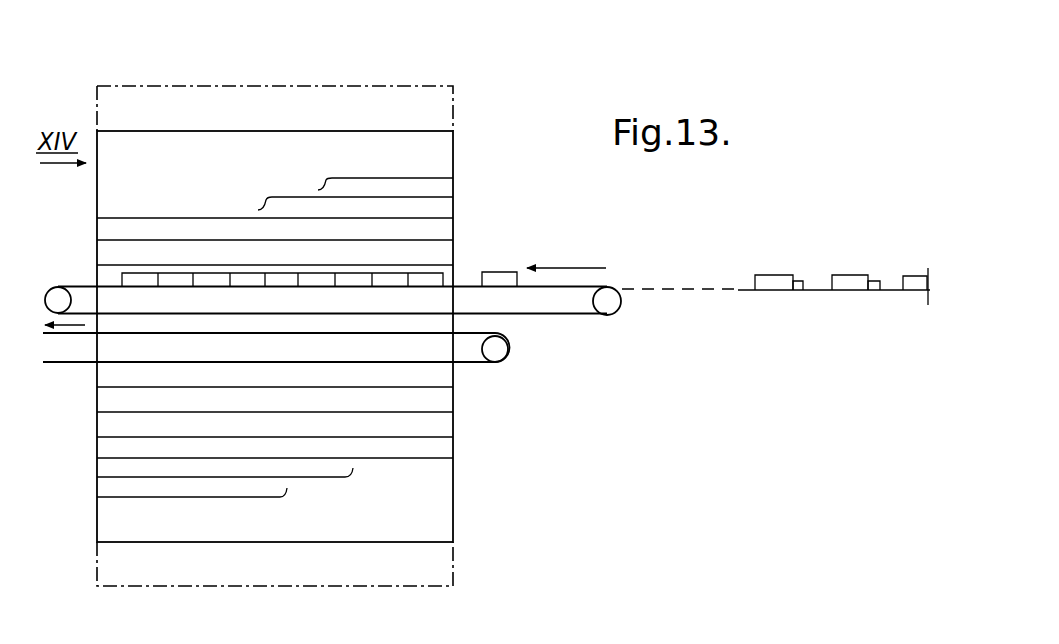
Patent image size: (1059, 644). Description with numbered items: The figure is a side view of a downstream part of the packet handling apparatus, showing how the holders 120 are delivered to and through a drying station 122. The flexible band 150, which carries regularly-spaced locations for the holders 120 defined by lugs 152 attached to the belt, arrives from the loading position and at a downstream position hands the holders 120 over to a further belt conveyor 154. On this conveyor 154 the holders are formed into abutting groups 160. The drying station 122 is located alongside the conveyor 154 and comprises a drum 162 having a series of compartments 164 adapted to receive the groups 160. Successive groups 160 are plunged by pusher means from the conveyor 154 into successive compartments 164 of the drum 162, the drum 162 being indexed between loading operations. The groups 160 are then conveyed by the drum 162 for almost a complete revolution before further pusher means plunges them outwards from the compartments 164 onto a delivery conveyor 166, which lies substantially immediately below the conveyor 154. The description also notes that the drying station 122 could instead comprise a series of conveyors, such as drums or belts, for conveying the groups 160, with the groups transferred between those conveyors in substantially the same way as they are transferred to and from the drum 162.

The holder 120 is at (388, 282).
The drying station 122 is at (259, 78).
The flexible band 150 is at (815, 293).
The lug 152 is at (803, 282).
The further belt conveyor 154 is at (592, 287).
The abutting group 160 is at (116, 278).
The drum 162 is at (438, 162).
The compartment 164 is at (148, 252).
The delivery conveyor 166 is at (505, 330).